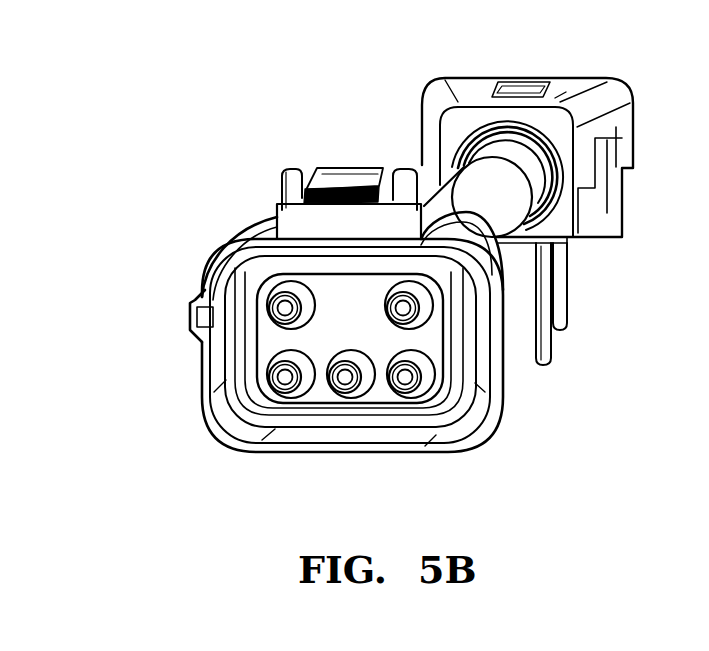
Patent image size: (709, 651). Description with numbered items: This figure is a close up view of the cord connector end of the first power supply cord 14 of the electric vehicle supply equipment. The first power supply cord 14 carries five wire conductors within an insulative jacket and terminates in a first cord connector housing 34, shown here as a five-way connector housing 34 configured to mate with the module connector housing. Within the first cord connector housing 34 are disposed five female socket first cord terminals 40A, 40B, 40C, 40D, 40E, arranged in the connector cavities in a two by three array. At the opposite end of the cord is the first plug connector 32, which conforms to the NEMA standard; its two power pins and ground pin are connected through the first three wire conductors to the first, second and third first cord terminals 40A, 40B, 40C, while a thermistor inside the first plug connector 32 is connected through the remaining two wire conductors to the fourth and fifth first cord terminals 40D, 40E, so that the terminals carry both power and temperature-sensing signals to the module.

The first power supply cord 14 is at (338, 81).
The first plug connector 32 is at (580, 82).
The first cord connector housing 34 is at (343, 241).
The first cord terminal 40A is at (423, 323).
The first cord terminal 40B is at (410, 390).
The first cord terminal 40C is at (334, 397).
The first cord terminal 40D is at (271, 313).
The first cord terminal 40E is at (265, 389).